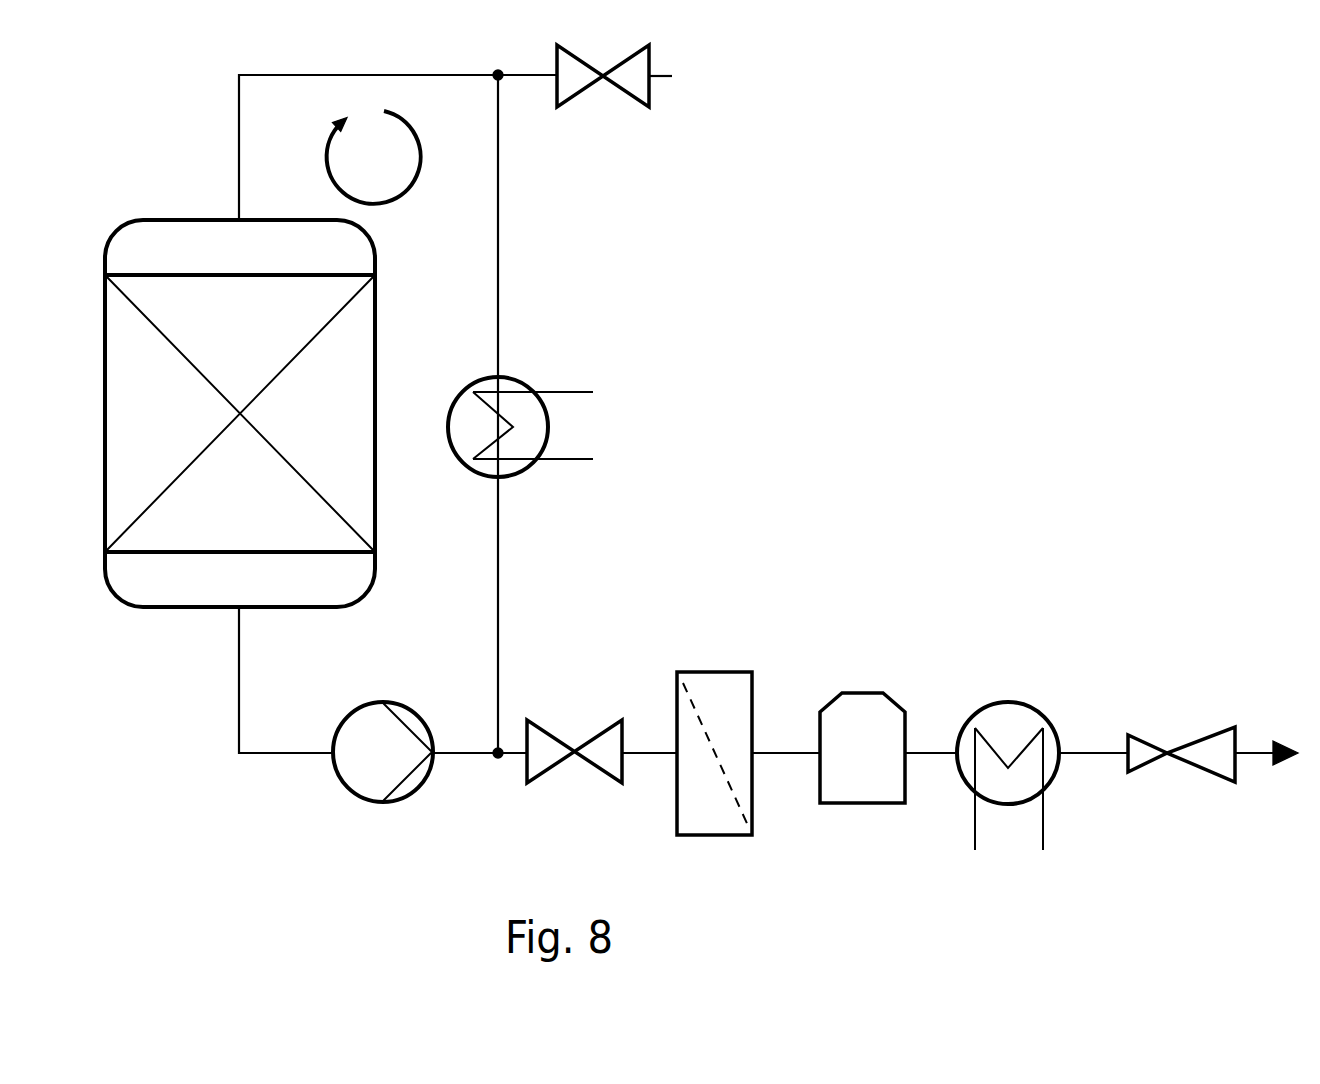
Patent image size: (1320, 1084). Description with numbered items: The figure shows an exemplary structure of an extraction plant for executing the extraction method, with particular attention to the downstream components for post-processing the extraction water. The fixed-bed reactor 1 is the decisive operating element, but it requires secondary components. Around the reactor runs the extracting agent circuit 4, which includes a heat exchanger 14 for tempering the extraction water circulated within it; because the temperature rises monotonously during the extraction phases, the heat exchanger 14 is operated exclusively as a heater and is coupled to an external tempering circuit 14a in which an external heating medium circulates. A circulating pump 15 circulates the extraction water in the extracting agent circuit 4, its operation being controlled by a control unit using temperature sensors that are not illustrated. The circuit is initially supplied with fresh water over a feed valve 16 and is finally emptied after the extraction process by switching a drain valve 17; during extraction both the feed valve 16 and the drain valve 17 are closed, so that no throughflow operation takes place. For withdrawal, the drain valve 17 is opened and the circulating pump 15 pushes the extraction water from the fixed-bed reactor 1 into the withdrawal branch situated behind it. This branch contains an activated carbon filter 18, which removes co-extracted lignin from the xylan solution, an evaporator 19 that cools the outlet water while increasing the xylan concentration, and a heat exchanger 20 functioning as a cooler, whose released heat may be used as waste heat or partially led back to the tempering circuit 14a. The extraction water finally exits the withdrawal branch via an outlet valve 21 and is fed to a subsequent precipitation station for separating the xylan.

The fixed-bed reactor 1 is at (353, 508).
The extracting agent circuit 4 is at (374, 157).
The heat exchanger 14 is at (513, 442).
The external tempering circuit 14a is at (593, 425).
The circulating pump 15 is at (362, 745).
The feed valve 16 is at (635, 87).
The drain valve 17 is at (545, 757).
The activated carbon filter 18 is at (725, 697).
The evaporator 19 is at (870, 712).
The heat exchanger 20 is at (1018, 720).
The outlet valve 21 is at (1158, 745).